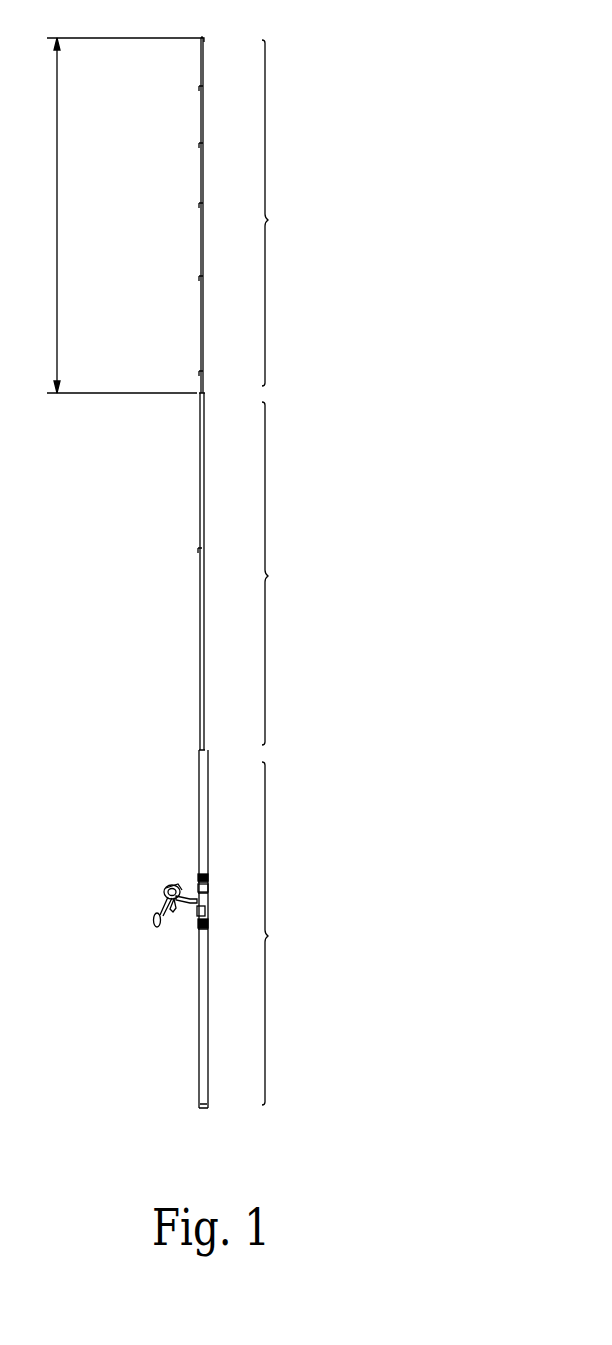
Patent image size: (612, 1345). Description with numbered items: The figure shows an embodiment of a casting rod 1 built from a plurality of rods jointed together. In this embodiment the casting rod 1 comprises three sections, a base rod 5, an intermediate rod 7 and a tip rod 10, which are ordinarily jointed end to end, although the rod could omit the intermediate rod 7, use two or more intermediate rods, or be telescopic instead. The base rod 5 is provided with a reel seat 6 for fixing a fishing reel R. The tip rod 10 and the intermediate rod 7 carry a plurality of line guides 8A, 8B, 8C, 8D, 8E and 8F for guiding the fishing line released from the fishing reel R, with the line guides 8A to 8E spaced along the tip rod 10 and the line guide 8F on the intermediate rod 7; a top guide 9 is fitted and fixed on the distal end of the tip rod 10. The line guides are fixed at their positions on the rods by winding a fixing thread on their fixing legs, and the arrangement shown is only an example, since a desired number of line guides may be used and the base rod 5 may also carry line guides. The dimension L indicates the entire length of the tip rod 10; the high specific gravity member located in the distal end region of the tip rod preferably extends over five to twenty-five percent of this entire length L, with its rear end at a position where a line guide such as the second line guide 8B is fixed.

The casting rod 1 is at (243, 554).
The base rod 5 is at (246, 929).
The reel seat 6 is at (199, 921).
The intermediate rod 7 is at (246, 571).
The line guide 8A is at (199, 88).
The second line guide 8B is at (199, 145).
The line guide 8C is at (199, 205).
The line guide 8D is at (199, 278).
The line guide 8E is at (199, 373).
The line guide 8F is at (198, 550).
The top guide 9 is at (200, 38).
The tip rod 10 is at (251, 215).
The entire length of the tip rod L is at (116, 215).
The fishing reel R is at (158, 893).